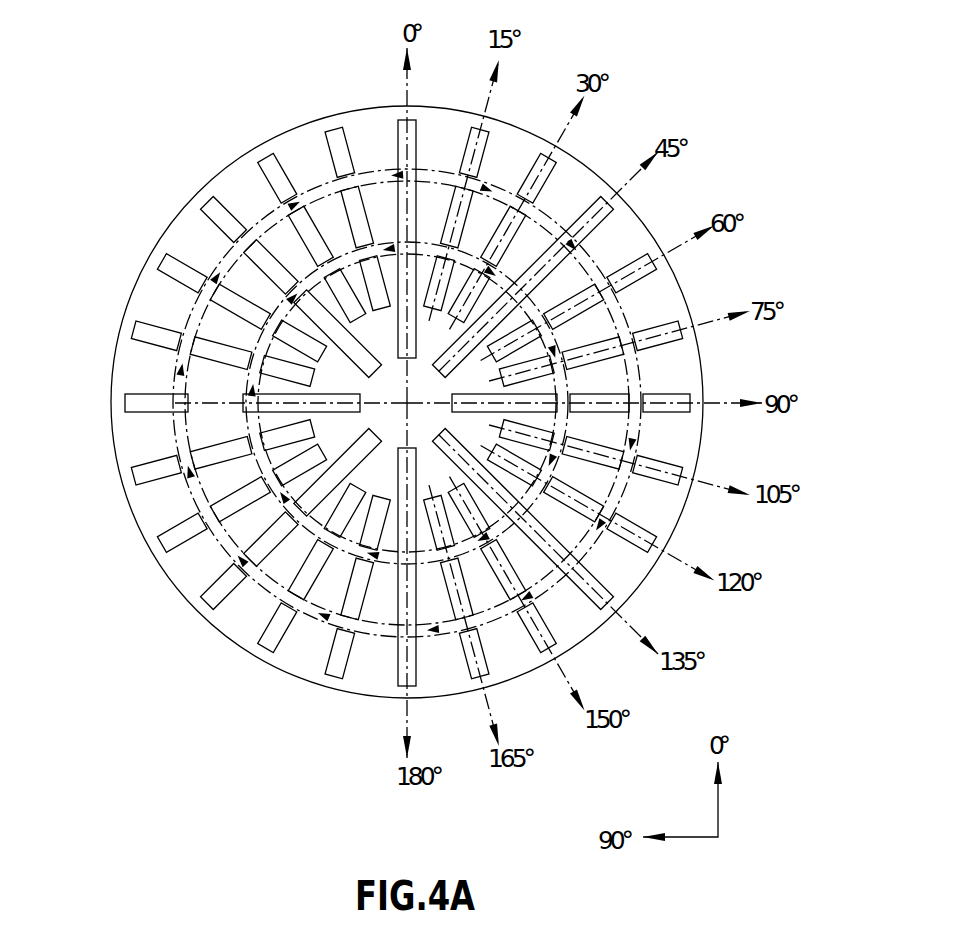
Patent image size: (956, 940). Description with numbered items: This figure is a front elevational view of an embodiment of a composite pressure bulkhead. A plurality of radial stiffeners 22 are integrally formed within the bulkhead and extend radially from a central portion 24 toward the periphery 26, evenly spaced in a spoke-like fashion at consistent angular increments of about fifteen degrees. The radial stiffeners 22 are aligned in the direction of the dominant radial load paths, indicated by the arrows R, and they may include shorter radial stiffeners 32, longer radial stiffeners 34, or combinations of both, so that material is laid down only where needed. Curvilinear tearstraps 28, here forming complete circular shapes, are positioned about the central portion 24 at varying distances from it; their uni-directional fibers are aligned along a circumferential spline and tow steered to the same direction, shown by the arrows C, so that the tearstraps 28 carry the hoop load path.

The radial stiffeners 22 is at (338, 140).
The central portion 24 is at (393, 427).
The periphery 26 is at (158, 241).
The curvilinear tearstraps 28 is at (175, 438).
The shorter radial stiffeners 32 is at (337, 667).
The longer radial stiffeners 34 is at (230, 580).
The arrows C is at (379, 248).
The arrows R is at (563, 125).